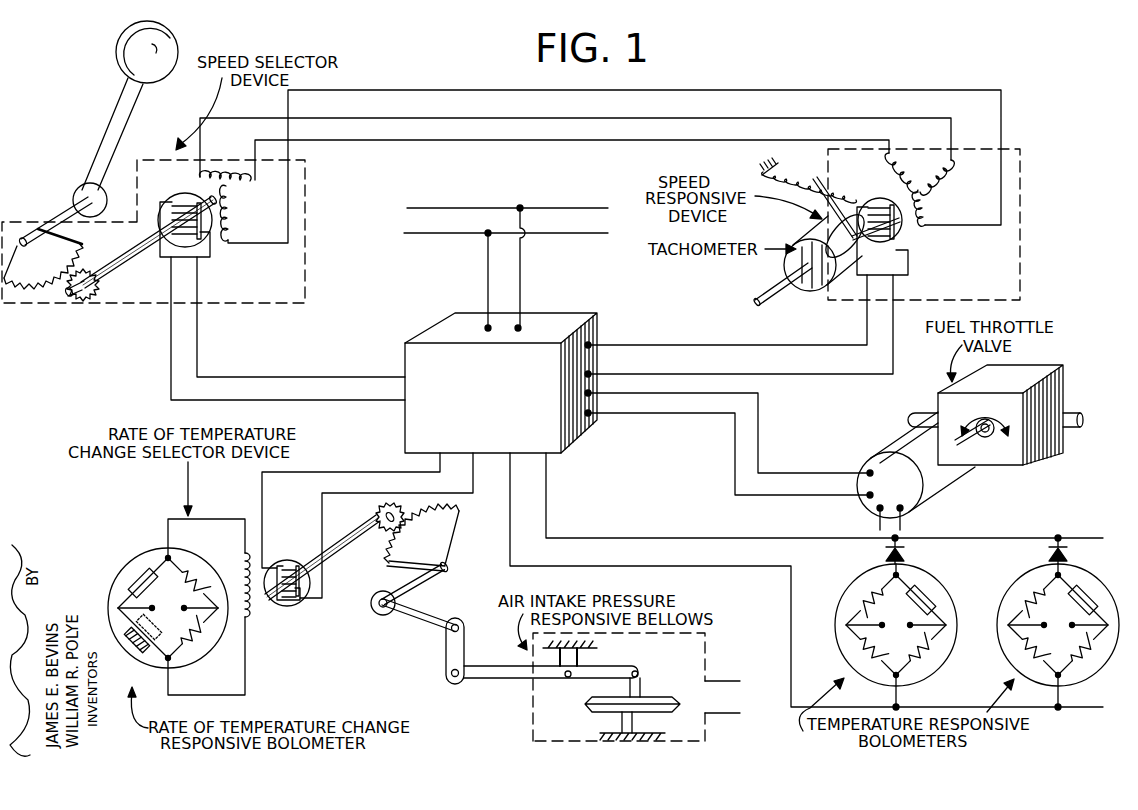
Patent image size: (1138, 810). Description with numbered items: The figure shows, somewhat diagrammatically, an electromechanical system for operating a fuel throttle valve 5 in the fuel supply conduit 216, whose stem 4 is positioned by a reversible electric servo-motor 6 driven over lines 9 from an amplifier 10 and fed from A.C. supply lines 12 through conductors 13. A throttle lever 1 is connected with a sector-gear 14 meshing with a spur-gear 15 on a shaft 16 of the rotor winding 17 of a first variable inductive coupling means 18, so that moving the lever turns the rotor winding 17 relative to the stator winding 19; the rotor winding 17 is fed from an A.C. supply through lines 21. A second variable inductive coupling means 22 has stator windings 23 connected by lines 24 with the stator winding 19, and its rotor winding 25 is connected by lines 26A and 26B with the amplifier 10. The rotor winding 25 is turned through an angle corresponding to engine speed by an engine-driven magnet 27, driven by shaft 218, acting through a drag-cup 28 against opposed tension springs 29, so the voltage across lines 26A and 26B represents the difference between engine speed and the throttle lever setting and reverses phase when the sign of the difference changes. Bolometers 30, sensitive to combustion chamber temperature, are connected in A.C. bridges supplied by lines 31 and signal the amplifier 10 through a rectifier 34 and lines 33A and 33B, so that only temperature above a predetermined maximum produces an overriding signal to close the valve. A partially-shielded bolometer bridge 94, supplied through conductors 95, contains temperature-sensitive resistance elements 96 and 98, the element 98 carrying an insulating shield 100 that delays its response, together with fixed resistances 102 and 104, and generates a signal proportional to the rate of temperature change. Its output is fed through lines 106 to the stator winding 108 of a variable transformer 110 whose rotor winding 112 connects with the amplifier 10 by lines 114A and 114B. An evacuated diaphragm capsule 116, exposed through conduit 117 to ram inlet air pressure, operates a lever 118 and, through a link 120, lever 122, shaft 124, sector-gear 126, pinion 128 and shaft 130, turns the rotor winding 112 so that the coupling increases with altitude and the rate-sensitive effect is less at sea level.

The throttle lever 1 is at (118, 125).
The sector-gear 14 is at (37, 277).
The spur-gear 15 is at (94, 300).
The shaft 16 is at (135, 252).
The rotor winding 17 is at (185, 195).
The first variable inductive coupling means 18 is at (220, 248).
The stator winding 19 is at (235, 203).
The lines 21 is at (280, 400).
The lines 24 is at (687, 140).
The A.C. supply lines 12 is at (494, 232).
The amplifier 10 is at (501, 383).
The stator windings 23 is at (930, 190).
The rotor winding 25 is at (878, 198).
The second variable inductive coupling means 22 is at (912, 232).
The drag-cup 28 is at (822, 234).
The opposed tension springs 29 is at (833, 181).
The engine-driven magnet 27 is at (814, 283).
The shaft 218 is at (770, 292).
The line 26A is at (750, 345).
The line 26B is at (708, 371).
The lines 9 is at (737, 467).
The reversible electric servo-motor 6 is at (910, 496).
The conductors 13 is at (878, 522).
The stem 4 is at (968, 447).
The fuel throttle valve 5 is at (1055, 395).
The conduit 216 is at (917, 414).
The line 33A is at (700, 538).
The line 33B is at (700, 566).
The rectifier 34 is at (908, 551).
The lines 31 is at (915, 623).
The bolometer 30 is at (928, 596).
The partially-shielded bolometer A.C. bridge 94 is at (142, 546).
The conductors 95 is at (188, 606).
The temperature-sensitive resistance element 96 is at (138, 577).
The fixed resistance 102 is at (197, 578).
The fixed resistance 104 is at (196, 637).
The insulating shield 100 is at (134, 651).
The temperature-sensitive resistance element 98 is at (148, 652).
The lines 106 is at (192, 519).
The stator winding 108 is at (243, 567).
The line 114B is at (262, 542).
The line 114A is at (322, 531).
The variable transformer 110 is at (260, 616).
The rotor winding 112 is at (308, 598).
The shaft 130 is at (338, 557).
The pinion 128 is at (398, 506).
The sector-gear 126 is at (442, 538).
The shaft 124 is at (417, 584).
The lever 122 is at (420, 618).
The link 120 is at (450, 665).
The lever 118 is at (503, 680).
The diaphragm capsule 116 is at (650, 694).
The conduit 117 is at (727, 712).